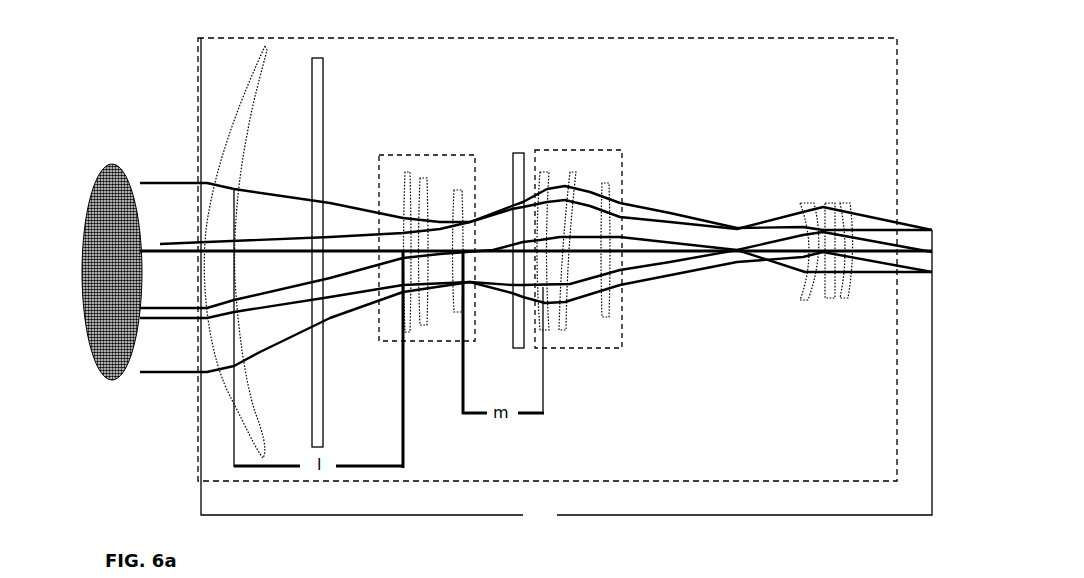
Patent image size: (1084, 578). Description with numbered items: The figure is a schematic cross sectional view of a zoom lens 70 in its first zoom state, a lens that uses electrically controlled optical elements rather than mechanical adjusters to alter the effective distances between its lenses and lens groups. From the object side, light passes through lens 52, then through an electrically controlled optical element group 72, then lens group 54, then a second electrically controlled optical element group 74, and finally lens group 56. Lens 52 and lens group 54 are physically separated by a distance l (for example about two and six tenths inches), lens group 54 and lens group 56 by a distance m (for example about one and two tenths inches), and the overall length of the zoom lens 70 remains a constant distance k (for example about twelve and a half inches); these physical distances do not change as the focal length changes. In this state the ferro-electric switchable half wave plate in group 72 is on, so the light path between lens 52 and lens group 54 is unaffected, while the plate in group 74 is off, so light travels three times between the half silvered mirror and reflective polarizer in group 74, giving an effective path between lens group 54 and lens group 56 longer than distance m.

The lens 52 is at (241, 158).
The electrically controlled optical element group 72 is at (327, 86).
The lens group 54 is at (432, 153).
The electrically controlled optical element group 74 is at (518, 150).
The lens group 56 is at (617, 148).
The zoom lens 70 is at (751, 486).